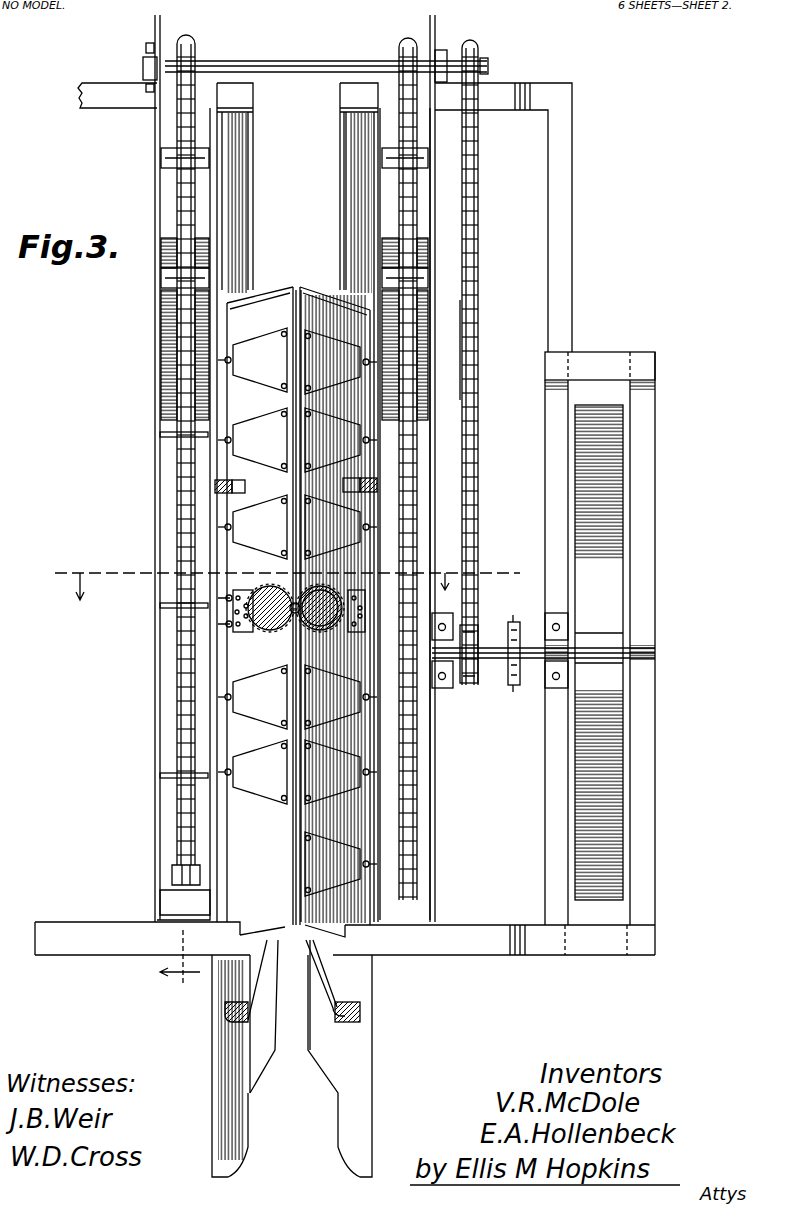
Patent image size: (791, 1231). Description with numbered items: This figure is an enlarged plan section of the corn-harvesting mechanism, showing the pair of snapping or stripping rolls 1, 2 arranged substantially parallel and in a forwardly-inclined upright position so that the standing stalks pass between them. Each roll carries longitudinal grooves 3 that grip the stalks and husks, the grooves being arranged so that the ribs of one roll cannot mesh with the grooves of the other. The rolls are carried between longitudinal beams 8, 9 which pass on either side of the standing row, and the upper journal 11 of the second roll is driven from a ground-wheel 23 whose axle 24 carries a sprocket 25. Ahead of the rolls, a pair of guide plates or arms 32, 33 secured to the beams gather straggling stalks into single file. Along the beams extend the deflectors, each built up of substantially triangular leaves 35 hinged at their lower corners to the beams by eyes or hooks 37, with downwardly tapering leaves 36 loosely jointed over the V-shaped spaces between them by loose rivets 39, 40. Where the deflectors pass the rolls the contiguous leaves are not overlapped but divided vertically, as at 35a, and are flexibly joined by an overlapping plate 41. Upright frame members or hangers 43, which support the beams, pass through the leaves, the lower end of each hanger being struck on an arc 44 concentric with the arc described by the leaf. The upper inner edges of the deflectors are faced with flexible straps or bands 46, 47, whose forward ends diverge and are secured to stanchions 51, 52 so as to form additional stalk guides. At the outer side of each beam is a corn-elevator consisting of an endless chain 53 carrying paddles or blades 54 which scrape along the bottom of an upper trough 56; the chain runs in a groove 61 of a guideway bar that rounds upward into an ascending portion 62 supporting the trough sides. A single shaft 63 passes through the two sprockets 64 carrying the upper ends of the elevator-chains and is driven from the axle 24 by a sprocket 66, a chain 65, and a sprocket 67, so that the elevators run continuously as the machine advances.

The snapping or stripping roll 1 is at (255, 630).
The snapping or stripping roll 2 is at (345, 645).
The longitudinal grooves 3 is at (322, 590).
The longitudinal beam 8 is at (245, 196).
The longitudinal beam 9 is at (343, 185).
The journal 11 is at (186, 35).
The ground-wheel 23 is at (600, 478).
The axle 24 is at (490, 660).
The sprocket 25 is at (518, 675).
The guide plate or arm 32 is at (264, 1016).
The guide plate or arm 33 is at (311, 995).
The deflector-leaf 35 is at (330, 545).
The vertical division of contiguous leaves 35a is at (368, 592).
The deflector-leaf 36 is at (445, 845).
The eyes or hooks 37 is at (365, 780).
The loose rivet 39 is at (297, 697).
The loose rivet 40 is at (285, 732).
The overlapping plate 41 is at (258, 600).
The upright frame member 43 is at (215, 485).
The arc 44 is at (246, 490).
The strap or band 46 is at (252, 1004).
The strap or band 47 is at (330, 978).
The stanchion 51 is at (240, 1012).
The stanchion 52 is at (362, 1015).
The endless conveyer or chain 53 is at (405, 42).
The paddle or blade 54 is at (410, 160).
The upper trough 56 is at (158, 208).
The groove 61 is at (175, 380).
The ascending portion 62 is at (385, 198).
The shaft 63 is at (303, 75).
The sprocket 64 is at (186, 60).
The chain 65 is at (470, 350).
The sprocket 66 is at (478, 50).
The sprocket 67 is at (475, 640).